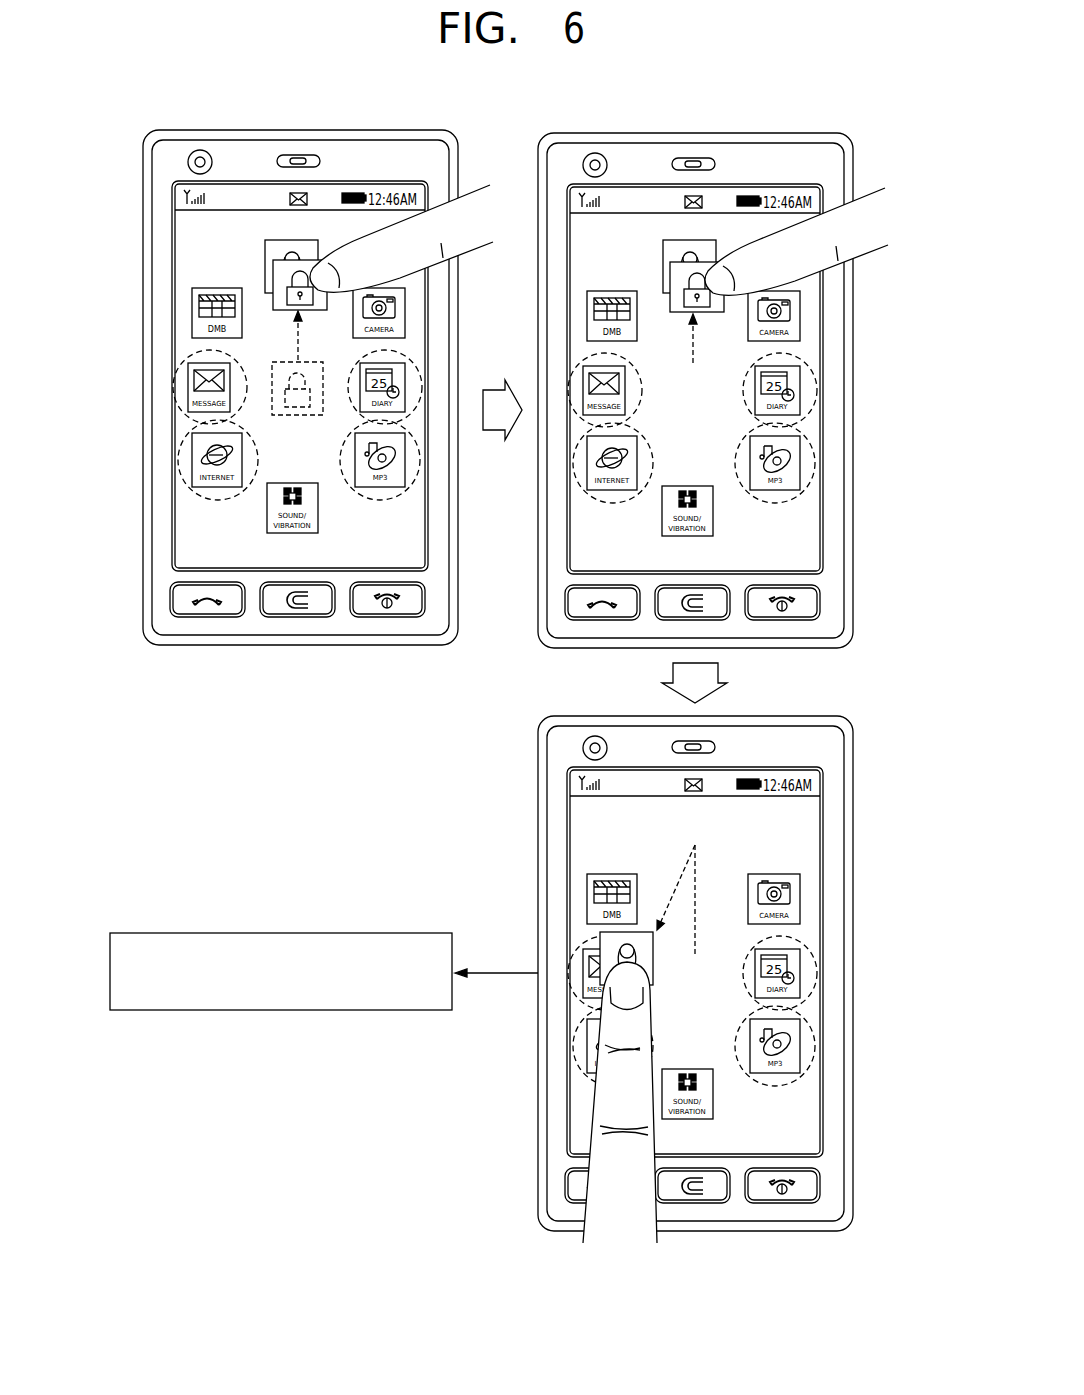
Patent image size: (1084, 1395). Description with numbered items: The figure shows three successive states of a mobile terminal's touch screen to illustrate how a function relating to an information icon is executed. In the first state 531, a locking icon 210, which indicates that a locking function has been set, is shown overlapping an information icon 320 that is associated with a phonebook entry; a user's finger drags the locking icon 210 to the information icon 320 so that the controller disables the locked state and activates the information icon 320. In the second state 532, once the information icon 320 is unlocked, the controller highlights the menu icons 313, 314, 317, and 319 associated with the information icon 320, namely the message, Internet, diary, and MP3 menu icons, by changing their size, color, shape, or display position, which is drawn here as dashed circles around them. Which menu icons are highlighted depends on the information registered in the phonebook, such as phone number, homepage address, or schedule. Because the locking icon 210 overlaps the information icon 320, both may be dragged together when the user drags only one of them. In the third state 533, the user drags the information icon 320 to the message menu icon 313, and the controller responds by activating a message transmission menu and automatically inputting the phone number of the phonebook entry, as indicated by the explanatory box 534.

The locking icon 210 is at (139, 136).
The information icon 320 is at (320, 190).
The first screen 531 is at (257, 376).
The highlighted menu icons state 532 is at (653, 379).
The dragging to message menu icon 533 is at (653, 962).
The message transmission activation box 534 is at (281, 933).
The menu icon 313 is at (563, 385).
The menu icon 314 is at (568, 468).
The menu icon 317 is at (826, 385).
The menu icon 319 is at (822, 468).